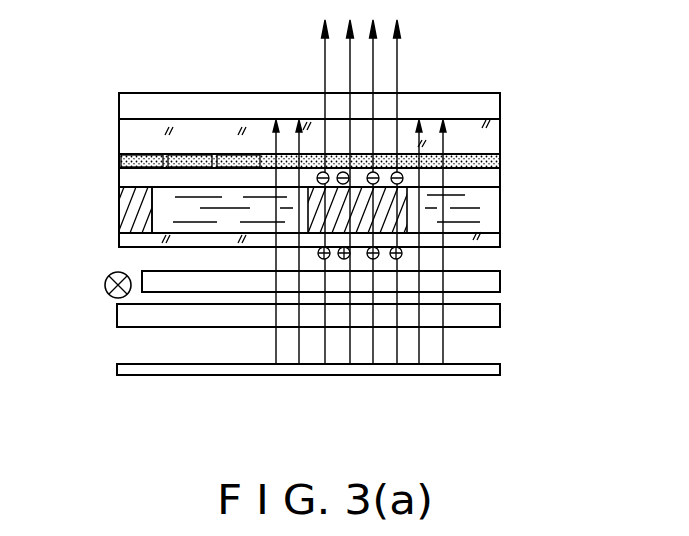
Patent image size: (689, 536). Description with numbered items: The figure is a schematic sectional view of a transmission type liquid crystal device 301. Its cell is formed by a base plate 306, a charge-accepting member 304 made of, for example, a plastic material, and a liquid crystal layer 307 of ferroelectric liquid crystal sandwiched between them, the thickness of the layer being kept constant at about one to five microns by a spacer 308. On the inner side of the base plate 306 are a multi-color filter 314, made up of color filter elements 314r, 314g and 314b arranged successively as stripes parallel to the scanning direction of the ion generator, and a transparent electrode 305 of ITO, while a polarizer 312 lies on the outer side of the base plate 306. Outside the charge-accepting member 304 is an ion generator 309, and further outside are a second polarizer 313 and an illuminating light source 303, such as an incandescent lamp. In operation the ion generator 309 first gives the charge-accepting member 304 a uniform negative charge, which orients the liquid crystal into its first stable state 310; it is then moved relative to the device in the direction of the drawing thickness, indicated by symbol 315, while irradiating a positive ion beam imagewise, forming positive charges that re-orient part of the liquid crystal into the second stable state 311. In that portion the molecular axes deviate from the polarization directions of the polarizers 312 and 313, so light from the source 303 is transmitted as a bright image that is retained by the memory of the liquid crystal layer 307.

The liquid crystal device 301 is at (590, 77).
The illuminating light source 303 is at (500, 364).
The charge-accepting member 304 is at (500, 238).
The transparent electrode 305 is at (500, 175).
The base plate 306 is at (132, 137).
The liquid crystal layer 307 is at (500, 200).
The spacer 308 is at (128, 200).
The ion generator 309 is at (160, 277).
The first stable state 310 is at (153, 210).
The second stable state 311 is at (400, 218).
The polarizer 312 is at (500, 96).
The polarizer 313 is at (488, 310).
The multi-color filter 314 is at (497, 157).
The color filter element 314r is at (153, 154).
The color filter element 314g is at (192, 154).
The color filter element 314b is at (248, 154).
The symbol indicating ion-generator movement direction 315 is at (105, 285).